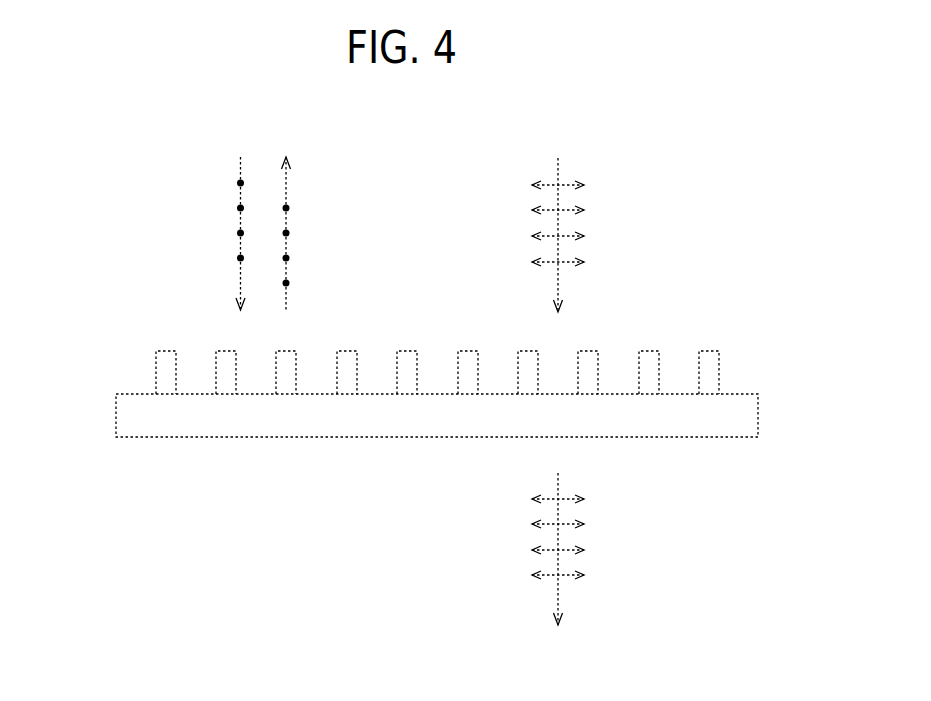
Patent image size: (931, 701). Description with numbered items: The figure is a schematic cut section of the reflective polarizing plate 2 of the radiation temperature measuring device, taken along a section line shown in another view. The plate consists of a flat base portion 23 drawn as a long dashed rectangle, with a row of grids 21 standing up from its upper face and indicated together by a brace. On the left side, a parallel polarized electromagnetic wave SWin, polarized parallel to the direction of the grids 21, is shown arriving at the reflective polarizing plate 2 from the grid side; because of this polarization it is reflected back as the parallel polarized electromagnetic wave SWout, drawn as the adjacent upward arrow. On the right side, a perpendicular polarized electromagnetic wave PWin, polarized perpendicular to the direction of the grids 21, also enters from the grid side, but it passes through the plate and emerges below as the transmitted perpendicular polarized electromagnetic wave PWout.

The reflective polarizing plate 2 is at (401, 397).
The grids 21 is at (436, 344).
The base plate 23 is at (138, 423).
The parallel polarized electromagnetic wave SWin is at (237, 182).
The parallel polarized electromagnetic wave SWout is at (290, 207).
The perpendicular polarized electromagnetic wave PWin is at (552, 184).
The perpendicular polarized electromagnetic wave PWout is at (553, 577).